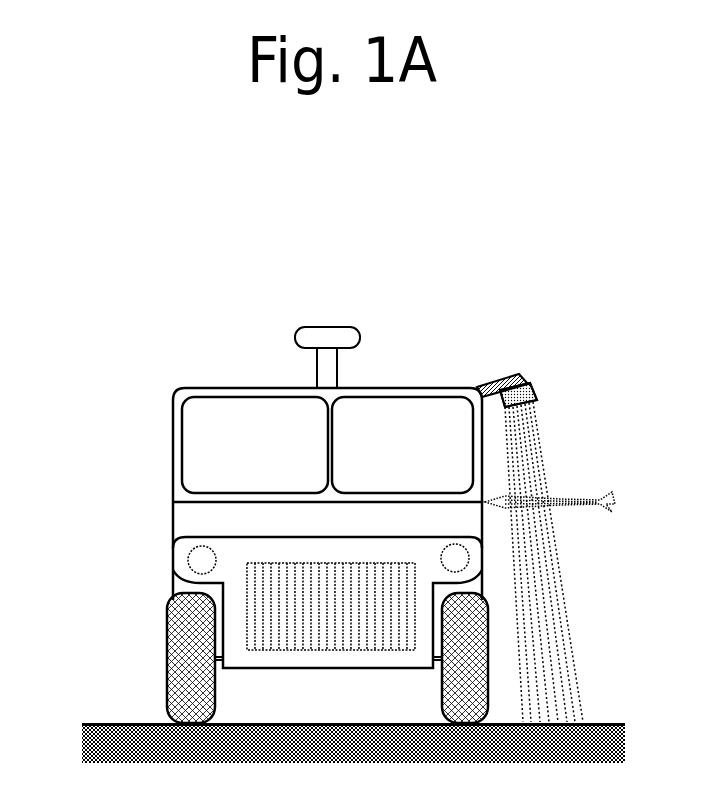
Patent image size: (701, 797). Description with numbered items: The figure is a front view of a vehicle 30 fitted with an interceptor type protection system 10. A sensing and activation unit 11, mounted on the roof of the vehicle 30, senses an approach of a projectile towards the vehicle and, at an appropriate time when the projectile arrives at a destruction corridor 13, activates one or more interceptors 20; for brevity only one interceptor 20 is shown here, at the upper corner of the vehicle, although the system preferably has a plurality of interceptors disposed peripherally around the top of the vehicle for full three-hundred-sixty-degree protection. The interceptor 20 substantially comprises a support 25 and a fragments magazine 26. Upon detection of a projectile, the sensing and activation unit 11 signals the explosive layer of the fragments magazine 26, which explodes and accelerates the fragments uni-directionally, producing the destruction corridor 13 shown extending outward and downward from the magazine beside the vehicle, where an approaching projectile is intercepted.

The interceptor type protection system 10 is at (353, 446).
The sensing and activation unit 11 is at (297, 322).
The destruction corridor 13 is at (543, 458).
The interceptor 20 is at (487, 367).
The support 25 is at (527, 372).
The fragments magazine 26 is at (537, 390).
The vehicle 30 is at (173, 517).